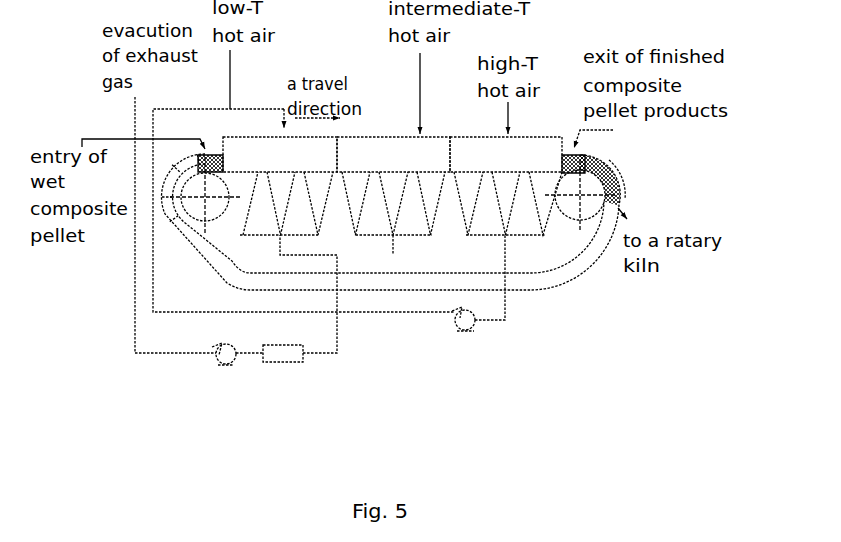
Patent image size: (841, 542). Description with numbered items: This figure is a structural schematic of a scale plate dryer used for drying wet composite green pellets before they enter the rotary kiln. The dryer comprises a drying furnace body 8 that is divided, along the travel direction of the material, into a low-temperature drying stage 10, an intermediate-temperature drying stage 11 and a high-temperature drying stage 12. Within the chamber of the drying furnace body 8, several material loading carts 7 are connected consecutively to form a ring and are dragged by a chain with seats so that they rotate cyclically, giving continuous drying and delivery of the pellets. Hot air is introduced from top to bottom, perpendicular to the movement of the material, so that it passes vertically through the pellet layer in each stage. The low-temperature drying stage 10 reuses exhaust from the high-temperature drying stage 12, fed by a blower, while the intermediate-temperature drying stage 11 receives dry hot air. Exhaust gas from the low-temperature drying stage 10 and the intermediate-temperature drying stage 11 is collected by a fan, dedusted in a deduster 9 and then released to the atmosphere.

The material loading cart 7 is at (215, 155).
The drying furnace body 8 is at (362, 150).
The deduster 9 is at (283, 365).
The low-temperature drying stage 10 is at (264, 148).
The intermediate-temperature drying stage 11 is at (407, 148).
The high-temperature drying stage 12 is at (528, 150).